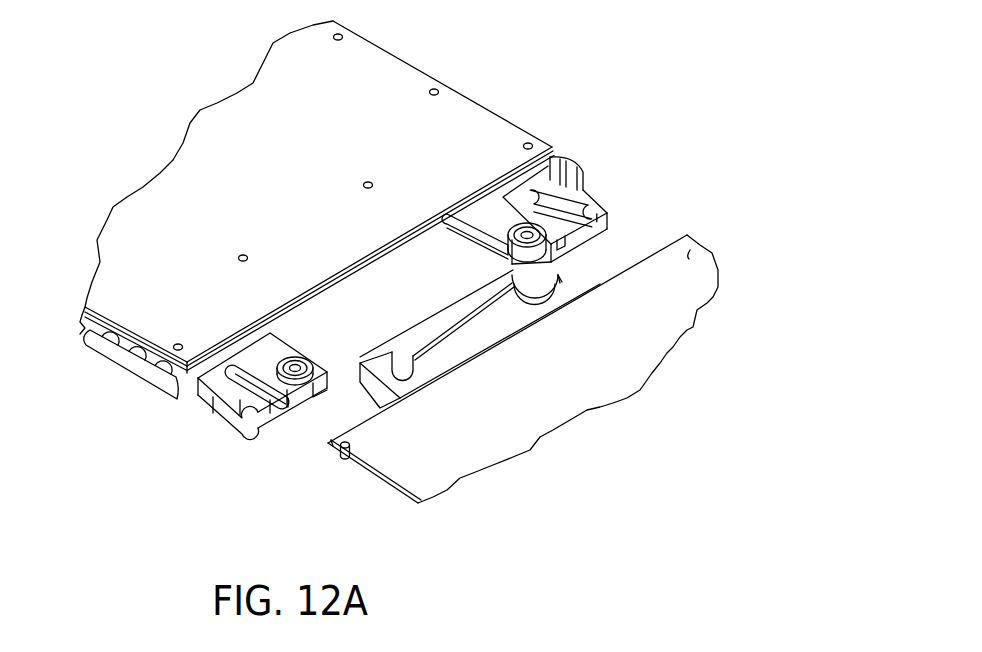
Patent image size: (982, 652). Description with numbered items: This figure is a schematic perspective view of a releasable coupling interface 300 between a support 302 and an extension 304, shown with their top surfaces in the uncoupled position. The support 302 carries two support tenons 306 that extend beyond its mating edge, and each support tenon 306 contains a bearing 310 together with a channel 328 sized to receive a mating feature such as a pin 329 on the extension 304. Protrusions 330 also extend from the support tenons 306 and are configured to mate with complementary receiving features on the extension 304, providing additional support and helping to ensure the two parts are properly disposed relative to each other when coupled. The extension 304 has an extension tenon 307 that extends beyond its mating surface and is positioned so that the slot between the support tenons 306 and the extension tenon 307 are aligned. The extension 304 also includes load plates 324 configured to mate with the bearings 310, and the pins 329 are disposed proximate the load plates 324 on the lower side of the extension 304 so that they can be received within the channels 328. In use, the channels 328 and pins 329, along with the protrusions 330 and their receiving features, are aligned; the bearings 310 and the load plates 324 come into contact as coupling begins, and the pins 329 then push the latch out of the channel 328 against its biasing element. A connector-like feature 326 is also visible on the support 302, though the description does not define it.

The releasable coupling interface 300 is at (416, 266).
The support 302 is at (462, 118).
The extension 304 is at (697, 250).
The support tenon 306 is at (608, 213).
The extension tenon 307 is at (560, 282).
The bearing 310 is at (508, 247).
The load plate 324 is at (450, 312).
The connector 326 is at (122, 362).
The channel 328 is at (590, 183).
The mating feature 329 is at (345, 455).
The protrusion 330 is at (560, 250).